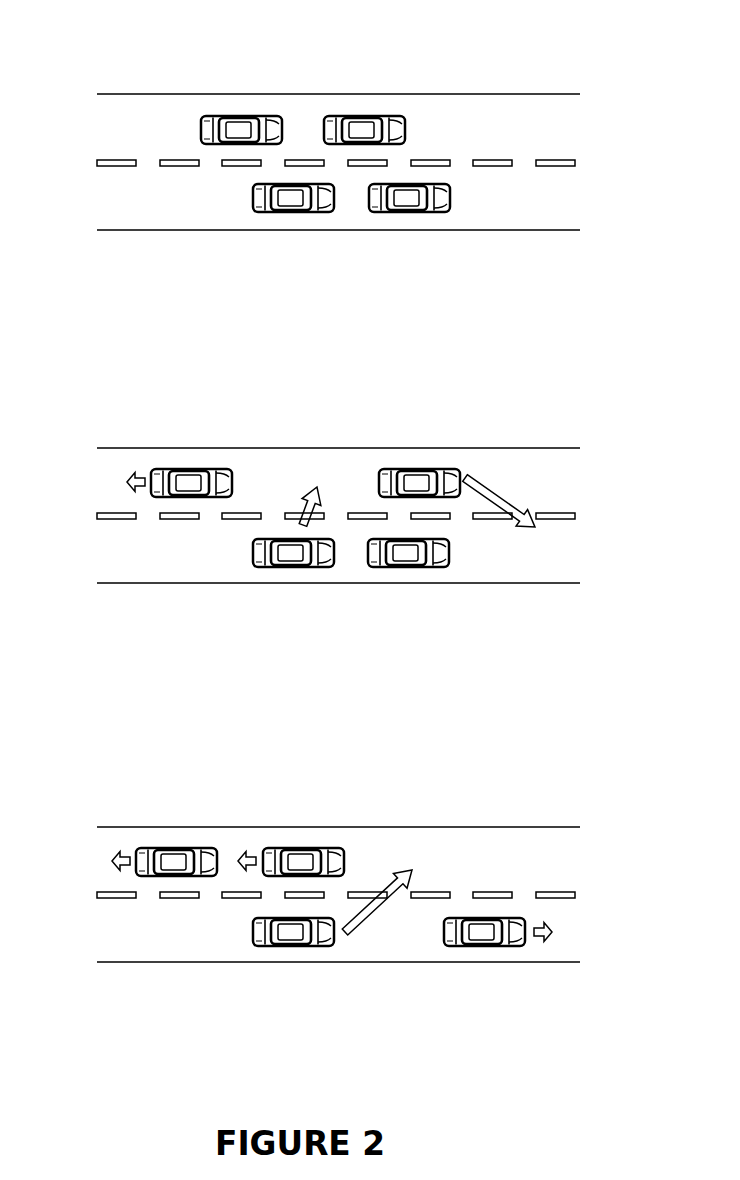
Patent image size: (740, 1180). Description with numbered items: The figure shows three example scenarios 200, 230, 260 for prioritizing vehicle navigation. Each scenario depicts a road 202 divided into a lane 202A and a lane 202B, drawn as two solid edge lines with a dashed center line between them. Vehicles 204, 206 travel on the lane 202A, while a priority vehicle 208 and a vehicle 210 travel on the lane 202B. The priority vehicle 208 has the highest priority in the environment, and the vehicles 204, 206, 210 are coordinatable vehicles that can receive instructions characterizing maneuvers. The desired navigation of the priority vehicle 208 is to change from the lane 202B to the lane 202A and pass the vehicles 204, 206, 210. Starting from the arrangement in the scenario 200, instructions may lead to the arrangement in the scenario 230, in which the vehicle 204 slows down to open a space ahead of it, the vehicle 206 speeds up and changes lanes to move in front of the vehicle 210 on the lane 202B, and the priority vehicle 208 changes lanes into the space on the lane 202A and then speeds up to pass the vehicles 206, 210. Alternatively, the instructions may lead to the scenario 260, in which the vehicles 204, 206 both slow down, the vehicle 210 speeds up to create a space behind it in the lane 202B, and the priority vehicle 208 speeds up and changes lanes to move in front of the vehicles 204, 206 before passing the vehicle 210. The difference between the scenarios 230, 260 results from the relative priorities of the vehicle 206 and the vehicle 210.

The scenario 200 is at (376, 120).
The road 202 is at (288, 827).
The lane 202A is at (103, 857).
The lane 202B is at (103, 961).
The vehicle 204 is at (172, 848).
The vehicle 206 is at (308, 848).
The priority vehicle 208 is at (290, 950).
The vehicle 210 is at (485, 950).
The scenario 230 is at (374, 473).
The scenario 260 is at (374, 852).